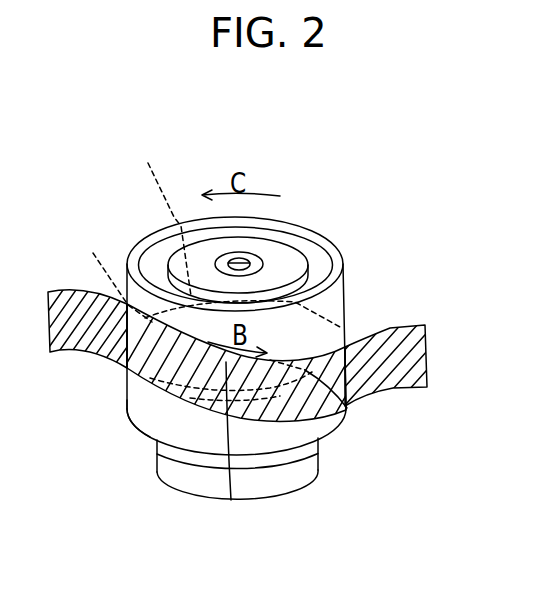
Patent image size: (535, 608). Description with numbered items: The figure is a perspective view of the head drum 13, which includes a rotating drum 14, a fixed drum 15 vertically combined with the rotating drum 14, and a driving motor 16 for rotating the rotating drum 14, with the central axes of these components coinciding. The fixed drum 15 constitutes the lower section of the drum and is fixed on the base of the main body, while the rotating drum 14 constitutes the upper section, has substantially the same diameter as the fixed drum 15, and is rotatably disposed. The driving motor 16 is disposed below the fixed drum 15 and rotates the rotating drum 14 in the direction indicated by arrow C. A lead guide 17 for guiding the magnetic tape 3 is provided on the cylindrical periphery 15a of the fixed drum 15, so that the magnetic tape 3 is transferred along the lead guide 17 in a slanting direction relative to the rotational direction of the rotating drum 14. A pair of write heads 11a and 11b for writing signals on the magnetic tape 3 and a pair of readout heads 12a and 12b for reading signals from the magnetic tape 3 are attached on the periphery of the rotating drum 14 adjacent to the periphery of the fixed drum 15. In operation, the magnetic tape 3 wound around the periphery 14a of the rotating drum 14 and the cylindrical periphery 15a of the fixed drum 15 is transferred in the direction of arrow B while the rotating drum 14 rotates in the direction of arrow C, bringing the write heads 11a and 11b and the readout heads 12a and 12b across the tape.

The magnetic tape 3 is at (398, 322).
The write head 11a is at (346, 412).
The write head 11b is at (186, 310).
The readout head 12a is at (231, 500).
The readout head 12b is at (234, 230).
The head drum 13 is at (96, 216).
The rotating drum 14 is at (317, 230).
The periphery 14a is at (337, 304).
The fixed drum 15 is at (325, 430).
The cylindrical periphery 15a is at (332, 432).
The driving motor 16 is at (287, 473).
The lead guide 17 is at (140, 427).